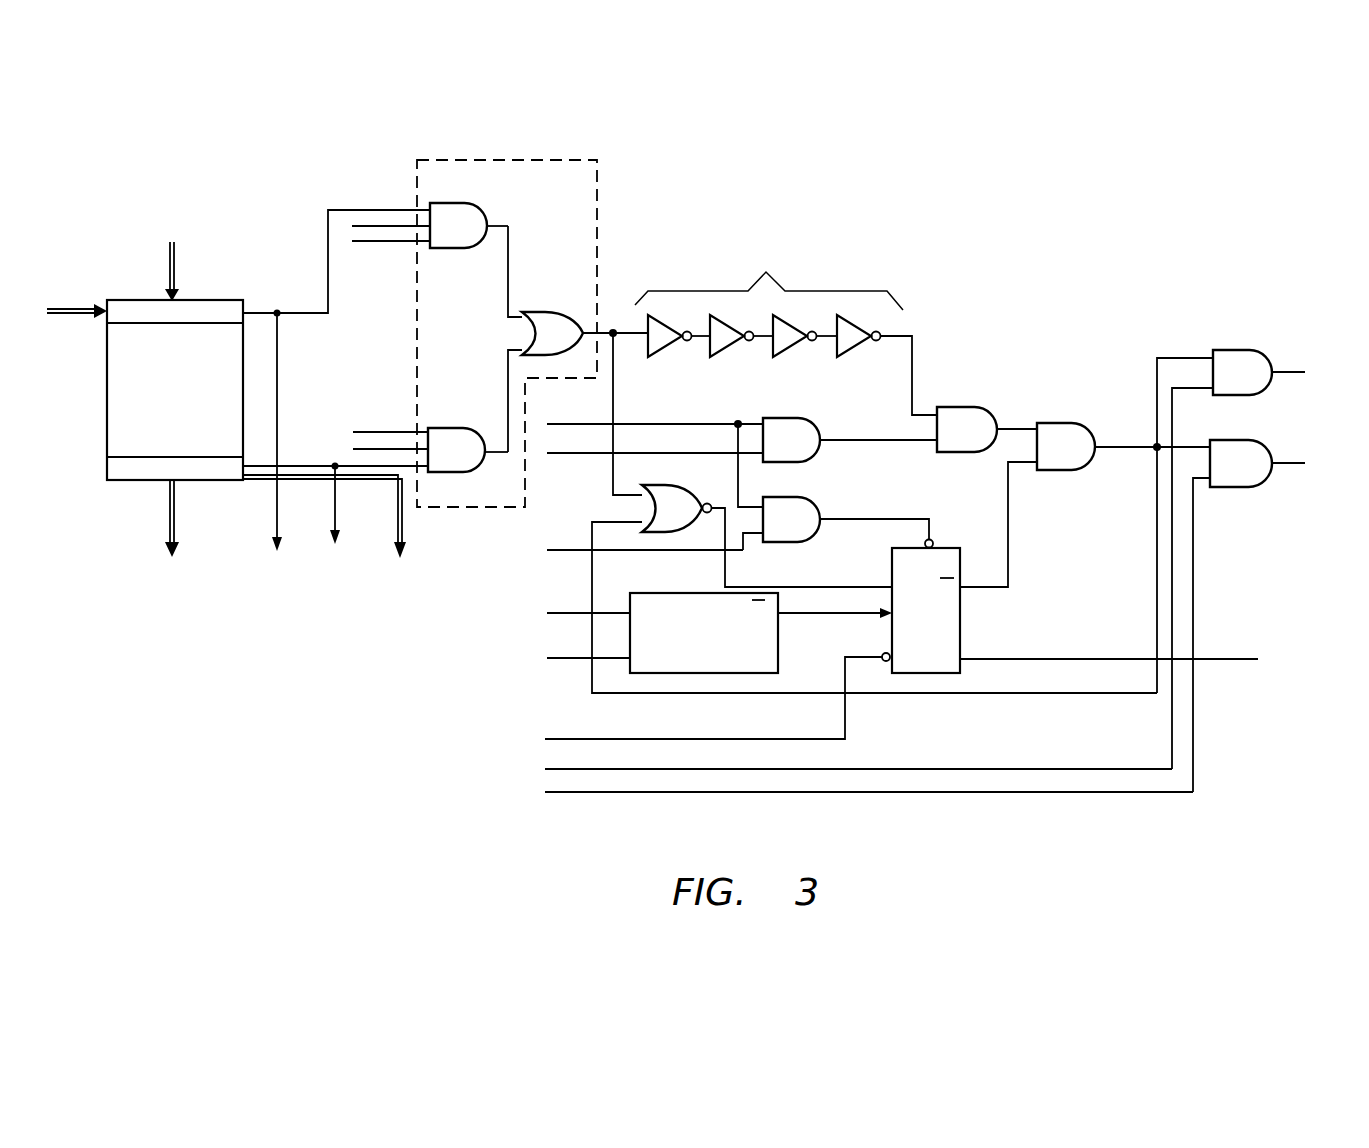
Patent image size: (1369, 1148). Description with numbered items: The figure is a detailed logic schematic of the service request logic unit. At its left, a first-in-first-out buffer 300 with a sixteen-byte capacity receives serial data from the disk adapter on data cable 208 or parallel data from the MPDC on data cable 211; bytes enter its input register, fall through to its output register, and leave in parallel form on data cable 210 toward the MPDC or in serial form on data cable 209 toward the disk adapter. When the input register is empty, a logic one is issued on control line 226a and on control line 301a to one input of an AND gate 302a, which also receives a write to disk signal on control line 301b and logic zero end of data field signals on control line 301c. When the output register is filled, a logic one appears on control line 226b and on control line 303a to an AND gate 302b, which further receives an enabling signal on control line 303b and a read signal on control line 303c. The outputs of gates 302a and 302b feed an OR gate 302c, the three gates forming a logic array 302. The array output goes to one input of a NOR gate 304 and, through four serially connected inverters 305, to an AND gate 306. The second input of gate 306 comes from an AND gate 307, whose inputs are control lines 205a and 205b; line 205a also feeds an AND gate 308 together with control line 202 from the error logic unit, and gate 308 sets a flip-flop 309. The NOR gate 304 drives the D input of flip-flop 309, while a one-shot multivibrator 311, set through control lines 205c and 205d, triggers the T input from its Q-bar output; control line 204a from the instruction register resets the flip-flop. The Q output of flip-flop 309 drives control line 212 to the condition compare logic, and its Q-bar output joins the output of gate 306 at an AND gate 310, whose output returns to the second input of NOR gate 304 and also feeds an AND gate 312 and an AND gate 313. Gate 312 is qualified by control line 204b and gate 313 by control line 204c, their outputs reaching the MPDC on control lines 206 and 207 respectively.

The first-in-first-out (FIFO) buffer 300 is at (107, 396).
The data cable 208 is at (72, 306).
The data cable 211 is at (178, 262).
The data cable 210 is at (165, 510).
The control line 301a is at (392, 208).
The control line 301b is at (352, 226).
The control line 301c is at (365, 244).
The logic array 302 is at (600, 186).
The AND gate 302a is at (472, 205).
The AND gate 302b is at (482, 468).
The OR gate 302c is at (578, 339).
The control line 303a is at (355, 464).
The control line 303b is at (355, 447).
The control line 303c is at (392, 408).
The control line 226a is at (272, 505).
The control line 226b is at (332, 512).
The data cable 209 is at (404, 523).
The serially connected inverters 305 is at (786, 331).
The control line 205a is at (590, 424).
The control line 205b is at (575, 455).
The control line 205c is at (560, 612).
The control line 205d is at (560, 657).
The AND gate 307 is at (805, 417).
The AND gate 308 is at (812, 497).
The control line 202 is at (572, 549).
The NOR gate 304 is at (660, 485).
The one-shot multivibrator 311 is at (665, 590).
The flip-flop 309 is at (892, 568).
The control line 212 is at (1090, 658).
The AND gate 306 is at (965, 405).
The AND gate 310 is at (1063, 420).
The AND gate 312 is at (1240, 348).
The AND gate 313 is at (1250, 440).
The control line 206 is at (1290, 370).
The control line 207 is at (1290, 462).
The control line 204a is at (545, 737).
The control line 204b is at (545, 767).
The control line 204c is at (545, 790).